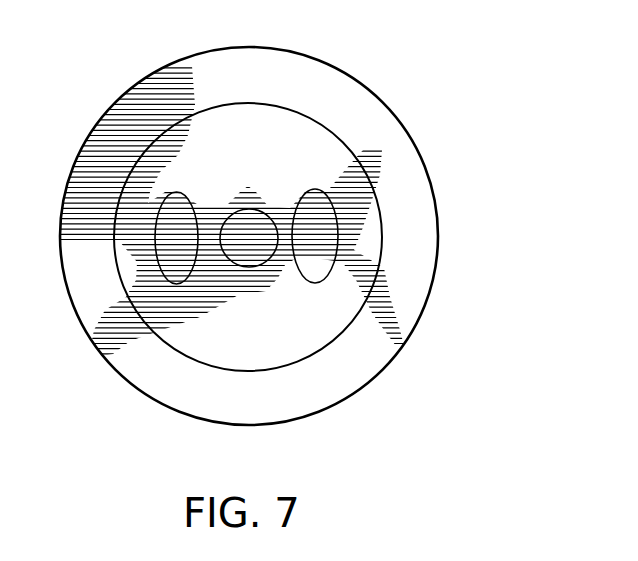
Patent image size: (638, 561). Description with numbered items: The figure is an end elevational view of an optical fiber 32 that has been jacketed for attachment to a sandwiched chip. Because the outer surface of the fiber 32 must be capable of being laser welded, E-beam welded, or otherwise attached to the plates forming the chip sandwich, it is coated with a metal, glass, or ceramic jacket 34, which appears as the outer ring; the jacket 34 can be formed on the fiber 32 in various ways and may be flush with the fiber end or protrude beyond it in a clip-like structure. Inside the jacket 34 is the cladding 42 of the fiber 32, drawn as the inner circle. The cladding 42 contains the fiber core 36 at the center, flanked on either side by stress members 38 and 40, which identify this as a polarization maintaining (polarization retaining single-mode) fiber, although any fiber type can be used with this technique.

The optical fiber 32 is at (380, 195).
The jacket 34 is at (376, 96).
The fiber core 36 is at (257, 256).
The stress member 38 is at (191, 204).
The stress member 40 is at (299, 204).
The cladding 42 is at (194, 342).